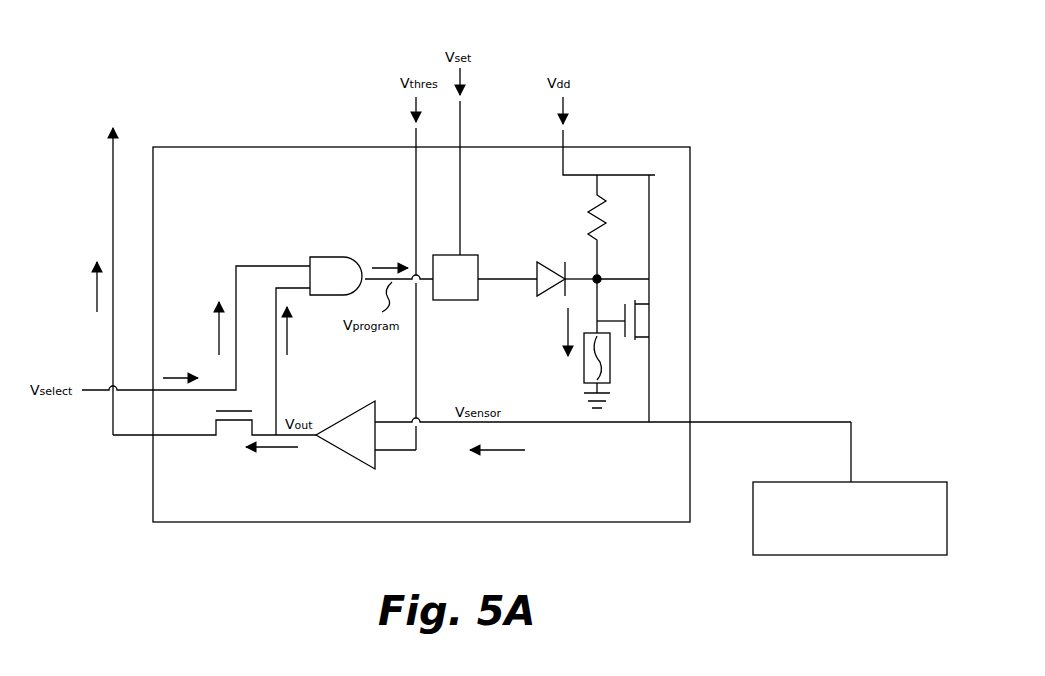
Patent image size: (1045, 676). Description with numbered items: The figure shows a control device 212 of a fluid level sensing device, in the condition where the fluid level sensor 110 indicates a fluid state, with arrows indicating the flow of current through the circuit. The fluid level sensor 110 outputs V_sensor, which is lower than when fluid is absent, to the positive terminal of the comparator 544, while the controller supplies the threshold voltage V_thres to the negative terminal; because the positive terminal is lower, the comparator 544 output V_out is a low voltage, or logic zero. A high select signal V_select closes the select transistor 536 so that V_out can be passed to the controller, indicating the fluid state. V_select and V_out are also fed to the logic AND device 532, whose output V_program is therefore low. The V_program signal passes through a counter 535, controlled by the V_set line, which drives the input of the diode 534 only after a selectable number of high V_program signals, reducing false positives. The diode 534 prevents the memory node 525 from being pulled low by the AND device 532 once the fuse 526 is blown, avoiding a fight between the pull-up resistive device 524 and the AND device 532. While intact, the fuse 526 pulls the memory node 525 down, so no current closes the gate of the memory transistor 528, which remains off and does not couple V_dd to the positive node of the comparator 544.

The control device 212 is at (133, 82).
The logic AND device 532 is at (333, 257).
The counter 535 is at (470, 270).
The diode 534 is at (540, 262).
The resistive device 524 is at (603, 192).
The memory node 525 is at (603, 279).
The memory transistor 528 is at (637, 324).
The fuse 526 is at (612, 376).
The select transistor 536 is at (233, 425).
The comparator 544 is at (338, 452).
The fluid level sensor 110 is at (850, 488).